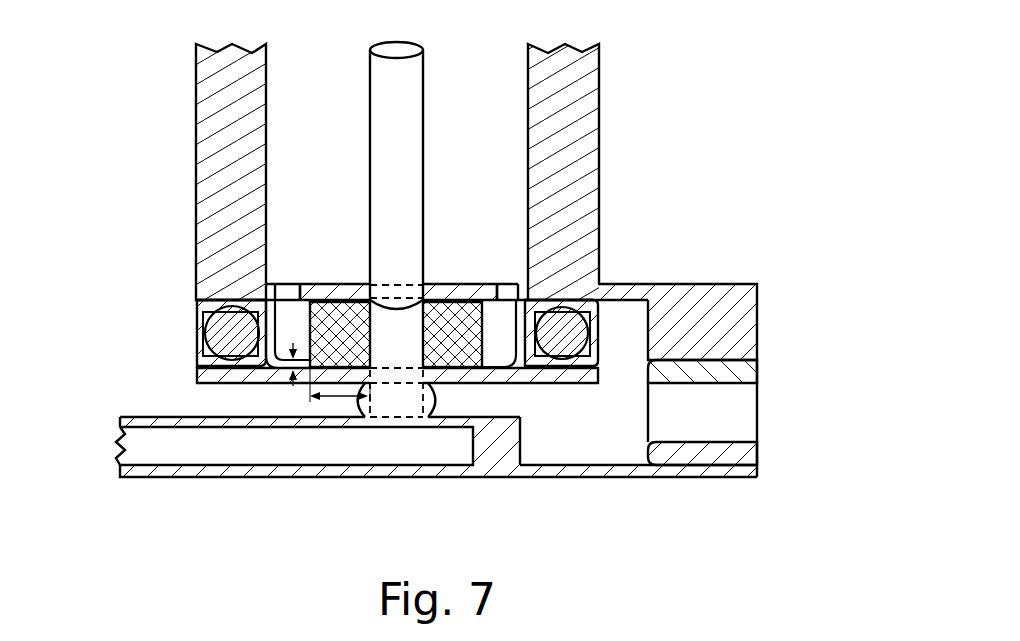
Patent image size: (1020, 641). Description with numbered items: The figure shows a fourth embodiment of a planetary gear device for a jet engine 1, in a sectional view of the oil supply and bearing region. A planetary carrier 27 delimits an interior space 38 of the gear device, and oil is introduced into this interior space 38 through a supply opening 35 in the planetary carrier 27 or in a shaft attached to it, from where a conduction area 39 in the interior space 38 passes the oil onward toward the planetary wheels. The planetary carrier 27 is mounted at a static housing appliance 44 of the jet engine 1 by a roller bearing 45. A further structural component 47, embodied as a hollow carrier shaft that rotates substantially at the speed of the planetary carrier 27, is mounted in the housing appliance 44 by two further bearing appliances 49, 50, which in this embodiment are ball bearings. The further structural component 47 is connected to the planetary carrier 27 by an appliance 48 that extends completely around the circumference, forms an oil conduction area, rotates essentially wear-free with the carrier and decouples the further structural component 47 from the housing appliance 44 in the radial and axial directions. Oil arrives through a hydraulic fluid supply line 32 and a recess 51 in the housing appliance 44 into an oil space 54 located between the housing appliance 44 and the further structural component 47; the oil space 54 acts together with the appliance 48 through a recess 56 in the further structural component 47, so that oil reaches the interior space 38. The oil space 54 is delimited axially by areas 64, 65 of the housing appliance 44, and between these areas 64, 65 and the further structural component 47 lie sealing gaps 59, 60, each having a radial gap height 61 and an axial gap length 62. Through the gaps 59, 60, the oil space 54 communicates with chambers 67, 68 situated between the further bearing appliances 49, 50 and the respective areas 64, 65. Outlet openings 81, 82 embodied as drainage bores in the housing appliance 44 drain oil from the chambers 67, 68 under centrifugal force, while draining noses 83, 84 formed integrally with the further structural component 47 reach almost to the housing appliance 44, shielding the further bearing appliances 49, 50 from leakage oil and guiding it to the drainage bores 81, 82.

The jet engine 1 is at (154, 61).
The planetary carrier 27 is at (503, 457).
The hydraulic fluid supply line 32 is at (410, 73).
The supply opening 35 is at (368, 412).
The interior space 38 is at (273, 448).
The conduction area 39 is at (178, 448).
The housing appliance 44 is at (591, 80).
The roller bearing 45 is at (757, 363).
The further structural component 47 is at (557, 383).
The appliance 48 is at (453, 374).
The further bearing appliance 49 is at (207, 306).
The further bearing appliance 50 is at (600, 284).
The recess 51 is at (404, 287).
The oil space 54 is at (361, 298).
The recess 56 is at (475, 286).
The gap 59 is at (326, 358).
The gap 60 is at (527, 297).
The gap height 61 is at (291, 382).
The gap length 62 is at (342, 386).
The area of the housing appliance 64 is at (306, 298).
The area of the housing appliance 65 is at (458, 355).
The chamber 67 is at (274, 305).
The chamber 68 is at (538, 300).
The outlet opening 81 is at (287, 286).
The outlet opening 82 is at (505, 286).
The draining nose 83 is at (225, 362).
The draining nose 84 is at (545, 374).